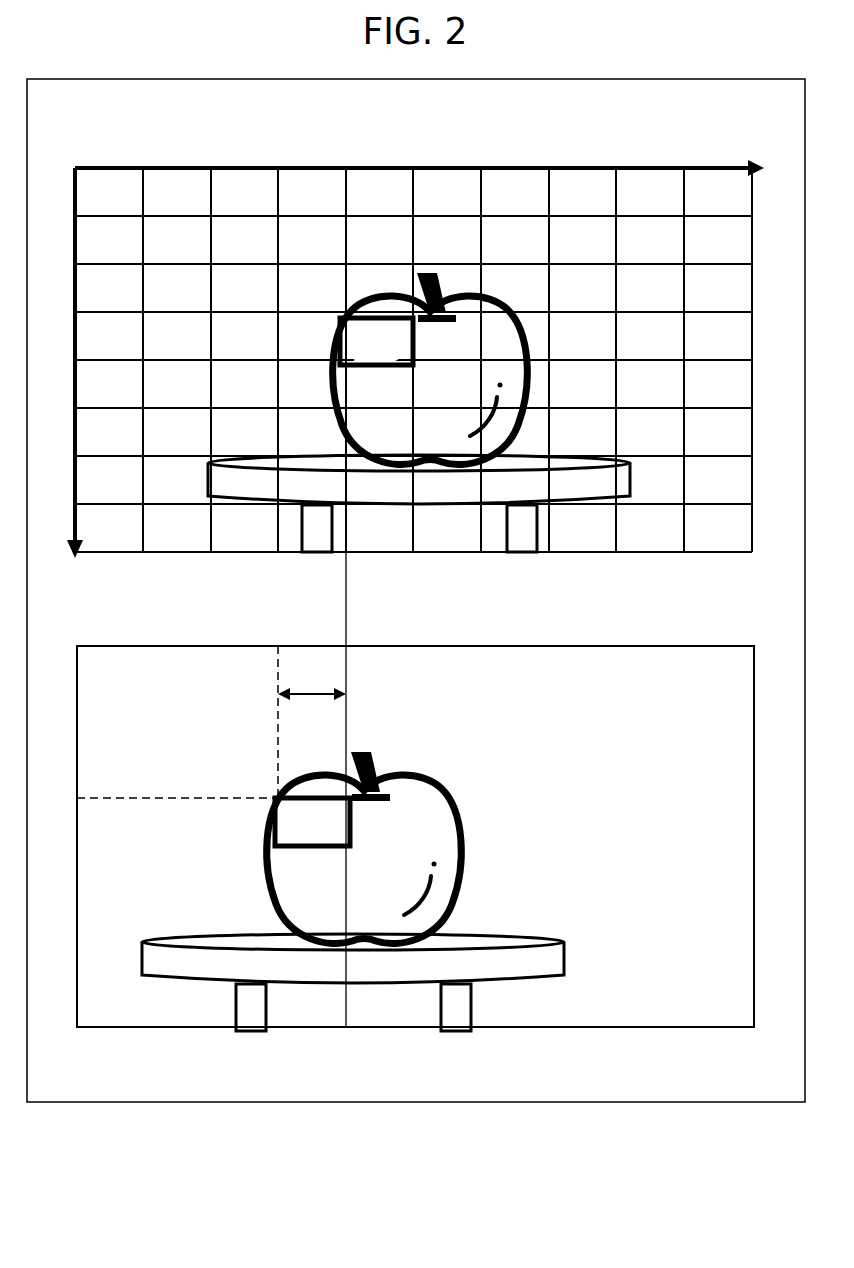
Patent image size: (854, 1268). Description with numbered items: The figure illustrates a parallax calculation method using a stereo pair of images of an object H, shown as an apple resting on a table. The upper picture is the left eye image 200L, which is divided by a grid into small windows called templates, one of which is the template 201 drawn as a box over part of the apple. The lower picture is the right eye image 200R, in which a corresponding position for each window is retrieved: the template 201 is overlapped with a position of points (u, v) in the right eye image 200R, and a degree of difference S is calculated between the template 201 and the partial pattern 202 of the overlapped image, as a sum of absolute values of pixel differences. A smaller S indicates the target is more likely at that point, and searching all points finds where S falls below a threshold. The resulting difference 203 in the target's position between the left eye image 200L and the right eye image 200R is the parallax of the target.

The left eye image 200L is at (637, 178).
The right eye image 200R is at (638, 655).
The template 201 is at (367, 310).
The partial pattern 202 is at (308, 795).
The difference in position of a target 203 is at (312, 680).
The object H is at (554, 392).